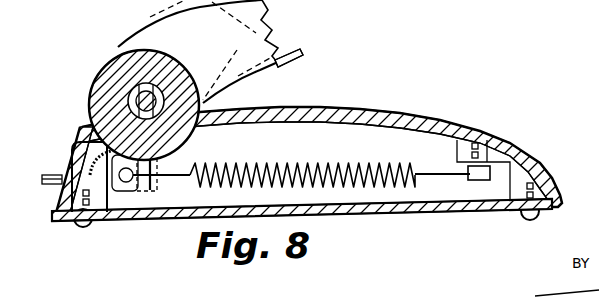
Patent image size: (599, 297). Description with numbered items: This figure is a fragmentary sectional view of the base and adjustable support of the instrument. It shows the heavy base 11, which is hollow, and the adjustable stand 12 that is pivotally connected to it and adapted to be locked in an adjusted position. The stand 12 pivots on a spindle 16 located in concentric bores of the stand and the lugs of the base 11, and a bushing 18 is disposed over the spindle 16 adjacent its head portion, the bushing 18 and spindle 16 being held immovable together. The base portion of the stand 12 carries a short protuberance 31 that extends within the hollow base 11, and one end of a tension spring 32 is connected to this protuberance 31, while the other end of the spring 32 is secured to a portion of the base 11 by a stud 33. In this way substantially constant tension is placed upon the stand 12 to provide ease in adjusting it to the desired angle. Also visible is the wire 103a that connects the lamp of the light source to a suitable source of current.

The base 11 is at (437, 123).
The adjustable stand 12 is at (263, 9).
The spindle 16 is at (134, 99).
The bushing 18 is at (142, 97).
The protuberance 31 is at (162, 158).
The tension spring 32 is at (297, 158).
The stud 33 is at (468, 176).
The wire 103a is at (298, 56).